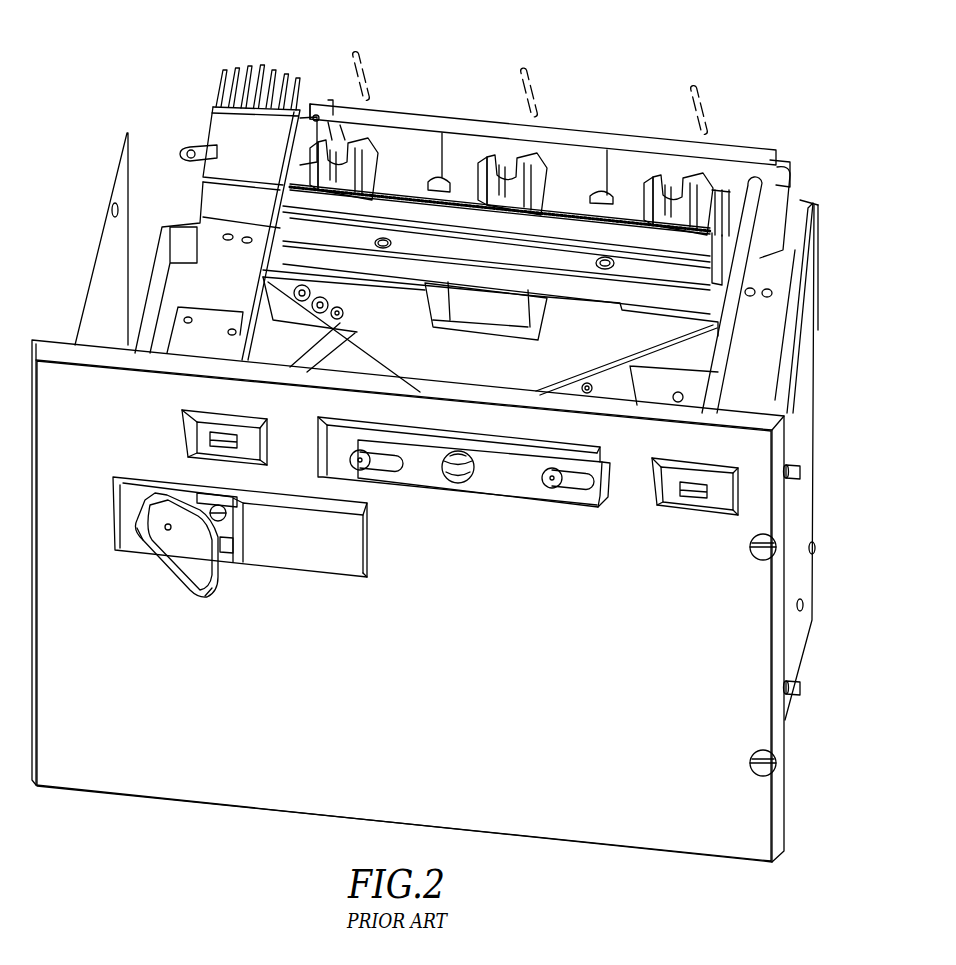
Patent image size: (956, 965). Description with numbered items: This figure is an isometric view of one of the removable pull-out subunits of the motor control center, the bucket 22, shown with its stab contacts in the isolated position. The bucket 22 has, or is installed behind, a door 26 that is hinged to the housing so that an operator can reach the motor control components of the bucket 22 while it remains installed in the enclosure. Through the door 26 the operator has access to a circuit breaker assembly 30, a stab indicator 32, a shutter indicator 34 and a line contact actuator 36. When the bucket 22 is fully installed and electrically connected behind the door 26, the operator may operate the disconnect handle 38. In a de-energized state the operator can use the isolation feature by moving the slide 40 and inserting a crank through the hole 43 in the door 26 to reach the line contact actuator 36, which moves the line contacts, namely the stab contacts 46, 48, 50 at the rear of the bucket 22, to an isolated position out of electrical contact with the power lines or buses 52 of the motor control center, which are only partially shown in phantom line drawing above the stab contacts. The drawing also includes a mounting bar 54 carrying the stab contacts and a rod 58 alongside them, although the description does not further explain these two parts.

The bucket 22 is at (134, 841).
The door 26 is at (429, 661).
The circuit breaker assembly 30 is at (290, 547).
The stab indicator 32 is at (197, 438).
The shutter indicator 34 is at (720, 495).
The line contact actuator 36 is at (464, 506).
The disconnect handle 38 is at (182, 570).
The slide 40 is at (523, 480).
The hole 43 is at (455, 477).
The stab contact 46 is at (362, 127).
The stab contact 48 is at (522, 180).
The stab contact 50 is at (697, 177).
The power lines or buses 52 is at (368, 48).
The mounting bar 54 is at (480, 130).
The rod 58 is at (718, 268).